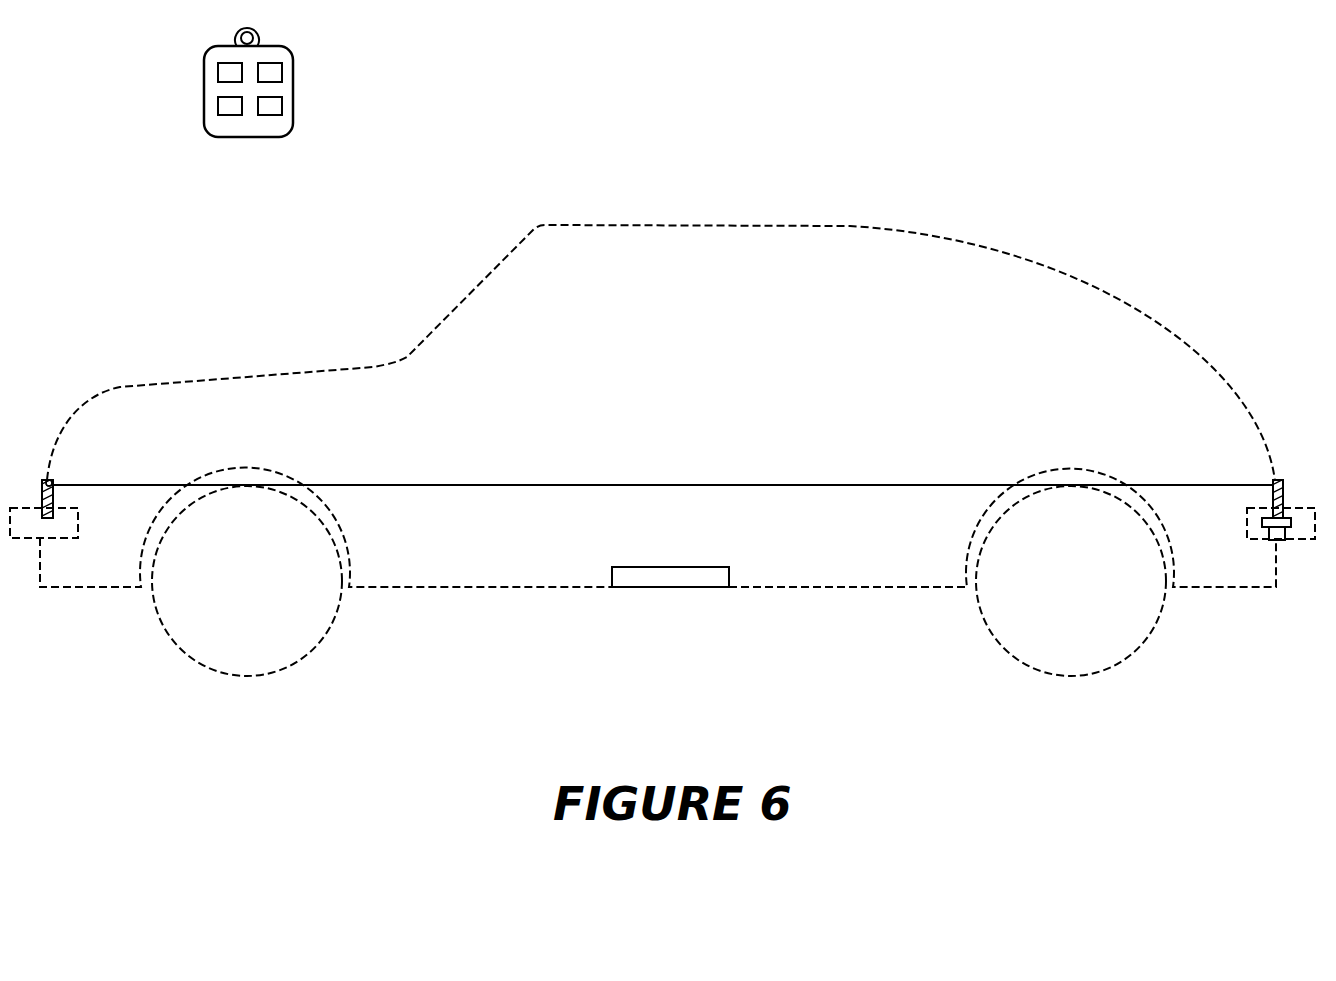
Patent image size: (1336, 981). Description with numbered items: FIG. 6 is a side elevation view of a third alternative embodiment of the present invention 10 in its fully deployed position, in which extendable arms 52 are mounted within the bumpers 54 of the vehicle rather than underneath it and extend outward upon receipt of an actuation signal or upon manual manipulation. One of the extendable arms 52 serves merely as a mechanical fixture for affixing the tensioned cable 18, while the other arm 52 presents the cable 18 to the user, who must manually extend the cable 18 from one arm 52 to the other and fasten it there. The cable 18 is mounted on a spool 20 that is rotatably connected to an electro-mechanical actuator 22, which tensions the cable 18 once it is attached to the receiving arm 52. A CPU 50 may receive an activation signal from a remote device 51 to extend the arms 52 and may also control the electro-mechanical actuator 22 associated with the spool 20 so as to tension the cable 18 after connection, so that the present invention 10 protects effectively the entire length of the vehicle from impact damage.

The present invention 10 is at (748, 374).
The tensioned cable 18 is at (555, 485).
The spool 20 is at (1260, 523).
The electro-mechanical actuator 22 is at (1272, 540).
The CPU 50 is at (670, 587).
The remote device 51 is at (291, 93).
The extendable arms 52 is at (43, 480).
The bumpers 54 is at (24, 540).